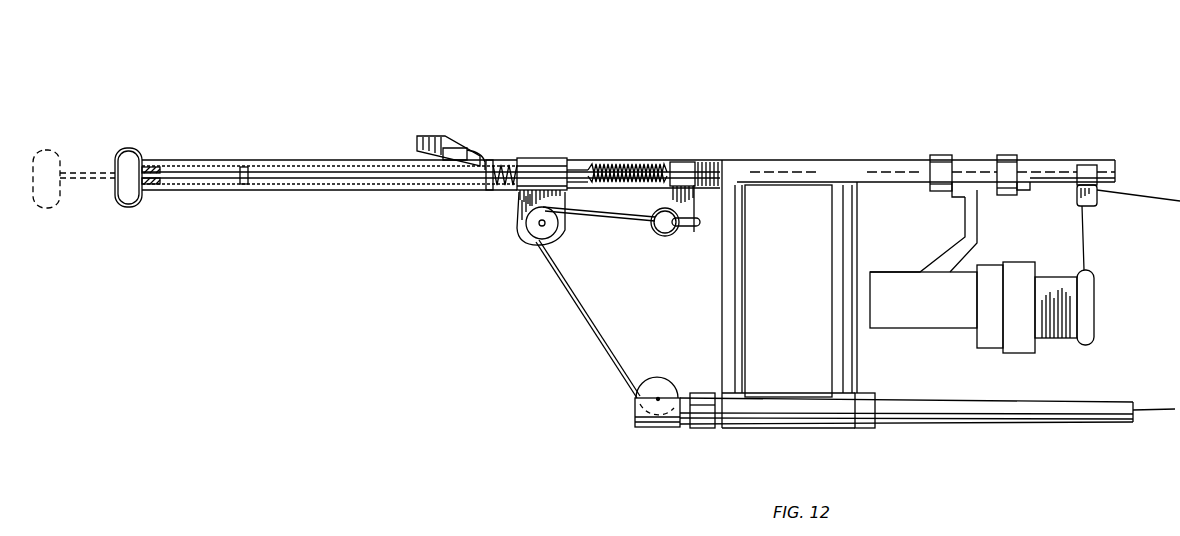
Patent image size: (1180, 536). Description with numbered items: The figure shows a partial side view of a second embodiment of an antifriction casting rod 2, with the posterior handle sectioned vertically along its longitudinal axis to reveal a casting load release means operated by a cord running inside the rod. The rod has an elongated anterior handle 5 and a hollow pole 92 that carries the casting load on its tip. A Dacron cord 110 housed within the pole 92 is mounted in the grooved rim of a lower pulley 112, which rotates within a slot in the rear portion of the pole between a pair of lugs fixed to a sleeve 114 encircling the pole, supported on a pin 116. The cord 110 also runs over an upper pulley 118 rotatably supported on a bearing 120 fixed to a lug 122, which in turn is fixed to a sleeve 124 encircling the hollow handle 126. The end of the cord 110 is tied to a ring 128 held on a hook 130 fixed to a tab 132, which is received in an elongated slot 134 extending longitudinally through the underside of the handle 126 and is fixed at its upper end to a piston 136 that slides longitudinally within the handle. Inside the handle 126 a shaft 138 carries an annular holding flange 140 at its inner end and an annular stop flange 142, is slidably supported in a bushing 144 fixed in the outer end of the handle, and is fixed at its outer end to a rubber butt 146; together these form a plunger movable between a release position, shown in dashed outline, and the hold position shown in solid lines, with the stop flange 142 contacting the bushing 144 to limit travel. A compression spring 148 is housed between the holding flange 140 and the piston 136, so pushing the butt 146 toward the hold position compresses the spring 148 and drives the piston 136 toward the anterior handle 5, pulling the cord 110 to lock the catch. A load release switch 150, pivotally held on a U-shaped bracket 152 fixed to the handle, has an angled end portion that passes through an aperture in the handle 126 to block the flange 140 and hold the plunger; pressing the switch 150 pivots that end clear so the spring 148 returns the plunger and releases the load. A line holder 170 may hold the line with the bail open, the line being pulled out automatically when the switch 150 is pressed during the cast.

The antifriction casting rod 2 is at (731, 82).
The anterior handle 5 is at (885, 160).
The hollow pole 92 is at (995, 425).
The cord 110 is at (572, 303).
The lower pulley 112 is at (650, 386).
The sleeve 114 is at (655, 430).
The pin 116 is at (660, 397).
The upper pulley 118 is at (525, 233).
The bearing 120 is at (547, 225).
The lug 122 is at (550, 242).
The sleeve 124 is at (542, 157).
The hollow handle 126 is at (280, 160).
The ring 128 is at (656, 241).
The hook 130 is at (699, 233).
The tab 132 is at (692, 230).
The elongated slot 134 is at (633, 196).
The piston 136 is at (688, 162).
The shaft 138 is at (353, 194).
The holding flange 140 is at (486, 192).
The stop flange 142 is at (244, 194).
The bushing 144 is at (162, 163).
The rubber butt 146 is at (122, 148).
The compression spring 148 is at (645, 159).
The load release switch 150 is at (427, 136).
The U-shaped bracket 152 is at (462, 147).
The line holder 170 is at (1077, 196).